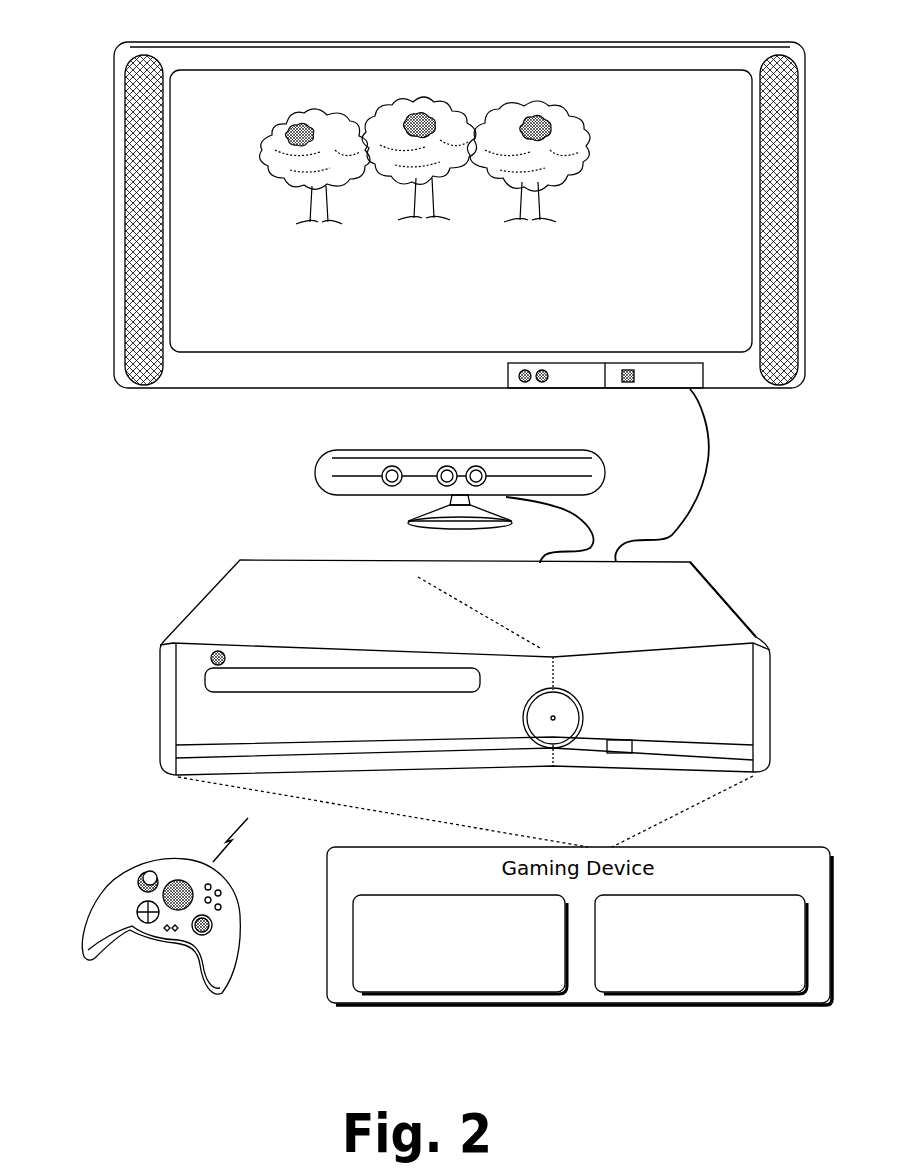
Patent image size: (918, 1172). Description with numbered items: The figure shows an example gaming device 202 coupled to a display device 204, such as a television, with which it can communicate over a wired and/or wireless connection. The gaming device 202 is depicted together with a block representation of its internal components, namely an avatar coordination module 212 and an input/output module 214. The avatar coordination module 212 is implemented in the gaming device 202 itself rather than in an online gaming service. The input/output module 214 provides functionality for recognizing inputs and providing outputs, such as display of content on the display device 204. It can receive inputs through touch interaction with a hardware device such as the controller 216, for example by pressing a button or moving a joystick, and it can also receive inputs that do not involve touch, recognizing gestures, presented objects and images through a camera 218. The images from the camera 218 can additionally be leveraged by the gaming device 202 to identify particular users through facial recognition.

The gaming device 202 is at (230, 568).
The display device 204 is at (172, 43).
The avatar coordination module 212 is at (395, 995).
The input/output module 214 is at (645, 995).
The controller 216 is at (118, 882).
The camera 218 is at (383, 448).